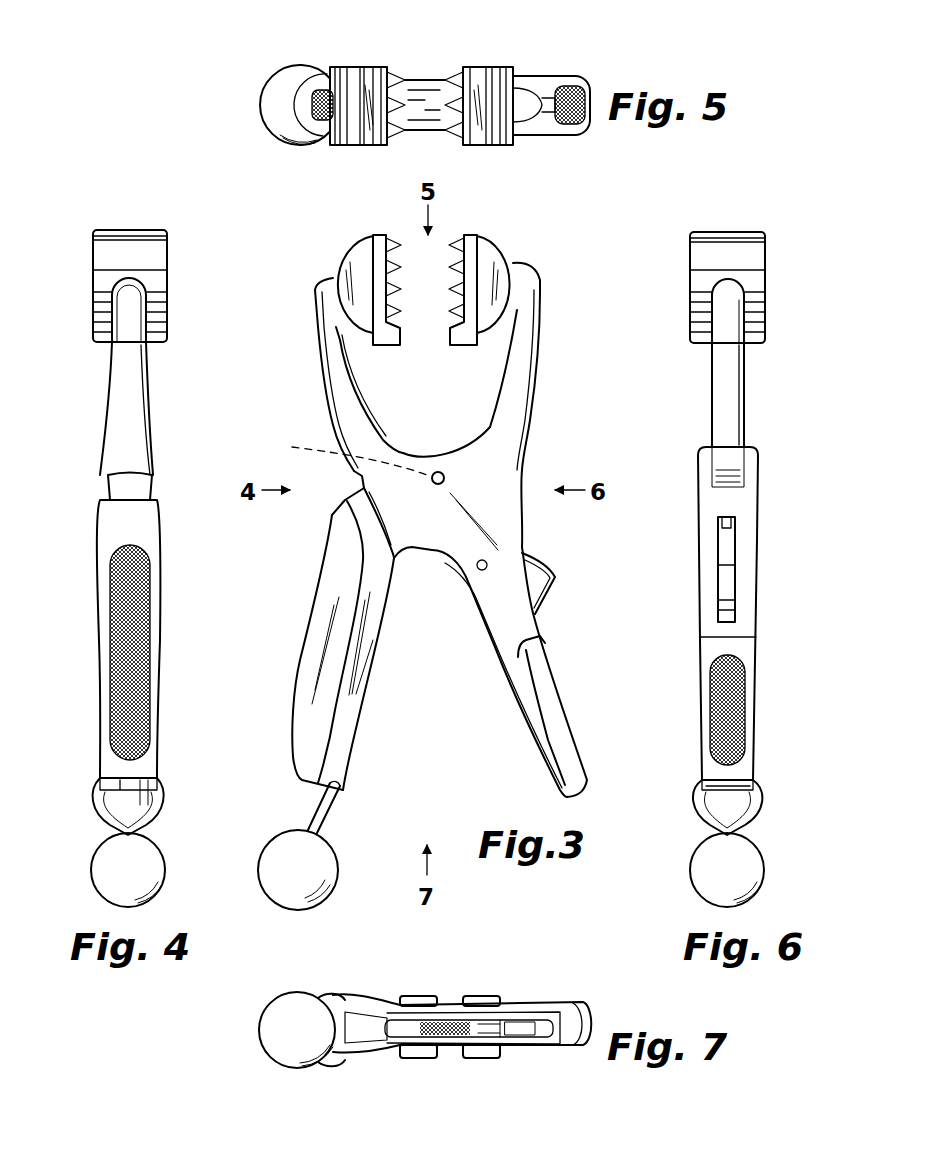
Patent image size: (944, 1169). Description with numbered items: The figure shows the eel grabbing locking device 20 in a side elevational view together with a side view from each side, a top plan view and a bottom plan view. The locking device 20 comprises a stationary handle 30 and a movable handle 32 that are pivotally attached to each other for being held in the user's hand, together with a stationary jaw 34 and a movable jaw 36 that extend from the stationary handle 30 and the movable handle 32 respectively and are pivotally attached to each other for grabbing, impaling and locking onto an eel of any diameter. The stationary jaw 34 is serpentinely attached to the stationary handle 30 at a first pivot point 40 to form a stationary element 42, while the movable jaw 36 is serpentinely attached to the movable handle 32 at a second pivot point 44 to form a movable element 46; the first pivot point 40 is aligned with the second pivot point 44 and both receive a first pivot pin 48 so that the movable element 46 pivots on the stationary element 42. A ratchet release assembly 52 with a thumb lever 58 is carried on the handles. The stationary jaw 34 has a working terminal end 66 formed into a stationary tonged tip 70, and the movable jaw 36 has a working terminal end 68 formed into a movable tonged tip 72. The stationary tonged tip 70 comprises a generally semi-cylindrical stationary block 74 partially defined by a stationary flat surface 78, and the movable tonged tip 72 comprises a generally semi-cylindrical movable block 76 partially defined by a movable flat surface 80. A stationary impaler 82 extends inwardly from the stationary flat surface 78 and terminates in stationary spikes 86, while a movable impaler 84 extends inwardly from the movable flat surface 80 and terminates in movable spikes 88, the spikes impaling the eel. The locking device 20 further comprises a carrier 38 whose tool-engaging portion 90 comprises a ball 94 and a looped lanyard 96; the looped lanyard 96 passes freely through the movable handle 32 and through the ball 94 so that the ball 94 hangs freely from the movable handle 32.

In FIG. 5, the locking device 20 is at (195, 98).
In FIG. 3, the locking device 20 is at (290, 412).
In FIG. 4, the locking device 20 is at (62, 448).
In FIG. 6, the locking device 20 is at (660, 412).
In FIG. 7, the locking device 20 is at (215, 1035).
In FIG. 5, the stationary handle 30 is at (547, 76).
In FIG. 3, the stationary handle 30 is at (526, 671).
In FIG. 6, the stationary handle 30 is at (758, 640).
In FIG. 7, the stationary handle 30 is at (557, 1000).
In FIG. 5, the movable handle 32 is at (322, 74).
In FIG. 3, the movable handle 32 is at (300, 638).
In FIG. 4, the movable handle 32 is at (100, 668).
In FIG. 7, the movable handle 32 is at (370, 1000).
In FIG. 5, the stationary jaw 34 is at (321, 98).
In FIG. 3, the stationary jaw 34 is at (312, 335).
In FIG. 4, the stationary jaw 34 is at (105, 368).
In FIG. 7, the stationary jaw 34 is at (460, 1024).
In FIG. 5, the movable jaw 36 is at (508, 95).
In FIG. 3, the movable jaw 36 is at (540, 352).
In FIG. 6, the movable jaw 36 is at (752, 362).
In FIG. 7, the movable jaw 36 is at (509, 1028).
In FIG. 5, the carrier 38 is at (278, 118).
In FIG. 3, the carrier 38 is at (280, 833).
In FIG. 4, the carrier 38 is at (162, 845).
In FIG. 6, the carrier 38 is at (692, 850).
In FIG. 7, the carrier 38 is at (285, 1000).
In FIG. 3, the first pivot point 40 is at (426, 468).
In FIG. 5, the stationary element 42 is at (543, 113).
In FIG. 3, the stationary element 42 is at (572, 690).
In FIG. 3, the second pivot point 44 is at (426, 468).
In FIG. 3, the movable element 46 is at (290, 447).
In FIG. 3, the first pivot pin 48 is at (432, 468).
In FIG. 3, the ratchet release assembly 52 is at (573, 563).
In FIG. 6, the ratchet release assembly 52 is at (770, 554).
In FIG. 3, the thumb lever 58 is at (532, 558).
In FIG. 6, the thumb lever 58 is at (742, 540).
In FIG. 5, the working terminal end 66 is at (321, 98).
In FIG. 3, the working terminal end 66 is at (313, 277).
In FIG. 4, the working terminal end 66 is at (154, 275).
In FIG. 5, the working terminal end 68 is at (508, 95).
In FIG. 3, the working terminal end 68 is at (546, 273).
In FIG. 6, the working terminal end 68 is at (727, 264).
In FIG. 5, the stationary tonged tip 70 is at (354, 68).
In FIG. 3, the stationary tonged tip 70 is at (313, 277).
In FIG. 4, the stationary tonged tip 70 is at (154, 275).
In FIG. 5, the movable tonged tip 72 is at (503, 64).
In FIG. 3, the movable tonged tip 72 is at (546, 273).
In FIG. 6, the movable tonged tip 72 is at (727, 264).
In FIG. 3, the stationary block 74 is at (348, 252).
In FIG. 4, the stationary block 74 is at (138, 255).
In FIG. 7, the stationary block 74 is at (460, 1024).
In FIG. 3, the movable block 76 is at (502, 248).
In FIG. 6, the movable block 76 is at (708, 255).
In FIG. 7, the movable block 76 is at (509, 1028).
In FIG. 5, the stationary flat surface 78 is at (398, 89).
In FIG. 3, the stationary flat surface 78 is at (384, 282).
In FIG. 7, the stationary flat surface 78 is at (418, 995).
In FIG. 5, the movable flat surface 80 is at (470, 70).
In FIG. 3, the movable flat surface 80 is at (453, 272).
In FIG. 7, the movable flat surface 80 is at (496, 995).
In FIG. 5, the stationary impaler 82 is at (398, 89).
In FIG. 3, the stationary impaler 82 is at (384, 282).
In FIG. 5, the movable impaler 84 is at (470, 70).
In FIG. 3, the movable impaler 84 is at (453, 272).
In FIG. 5, the stationary spikes 86 is at (366, 92).
In FIG. 3, the stationary spikes 86 is at (348, 268).
In FIG. 5, the movable spikes 88 is at (457, 95).
In FIG. 3, the movable spikes 88 is at (458, 266).
In FIG. 5, the tool-engaging portion 90 is at (262, 76).
In FIG. 3, the tool-engaging portion 90 is at (321, 848).
In FIG. 4, the tool-engaging portion 90 is at (124, 859).
In FIG. 6, the tool-engaging portion 90 is at (726, 859).
In FIG. 7, the tool-engaging portion 90 is at (270, 1013).
In FIG. 5, the ball 94 is at (262, 76).
In FIG. 3, the ball 94 is at (321, 848).
In FIG. 4, the ball 94 is at (124, 859).
In FIG. 6, the ball 94 is at (726, 859).
In FIG. 7, the ball 94 is at (270, 1013).
In FIG. 5, the looped lanyard 96 is at (322, 105).
In FIG. 3, the looped lanyard 96 is at (306, 806).
In FIG. 4, the looped lanyard 96 is at (165, 805).
In FIG. 6, the looped lanyard 96 is at (690, 800).
In FIG. 7, the looped lanyard 96 is at (333, 1075).